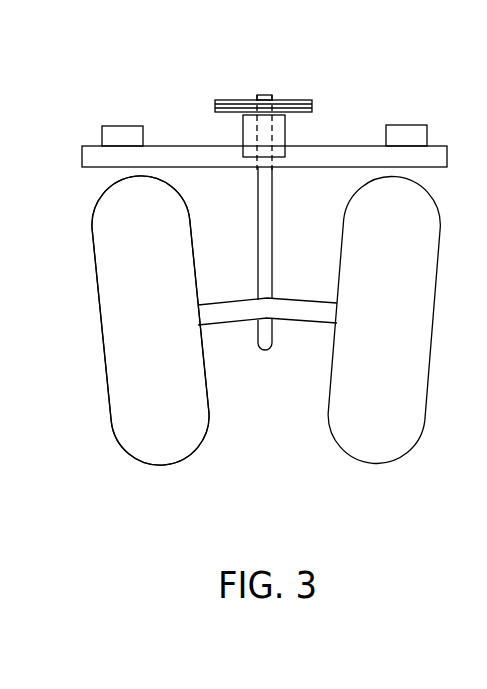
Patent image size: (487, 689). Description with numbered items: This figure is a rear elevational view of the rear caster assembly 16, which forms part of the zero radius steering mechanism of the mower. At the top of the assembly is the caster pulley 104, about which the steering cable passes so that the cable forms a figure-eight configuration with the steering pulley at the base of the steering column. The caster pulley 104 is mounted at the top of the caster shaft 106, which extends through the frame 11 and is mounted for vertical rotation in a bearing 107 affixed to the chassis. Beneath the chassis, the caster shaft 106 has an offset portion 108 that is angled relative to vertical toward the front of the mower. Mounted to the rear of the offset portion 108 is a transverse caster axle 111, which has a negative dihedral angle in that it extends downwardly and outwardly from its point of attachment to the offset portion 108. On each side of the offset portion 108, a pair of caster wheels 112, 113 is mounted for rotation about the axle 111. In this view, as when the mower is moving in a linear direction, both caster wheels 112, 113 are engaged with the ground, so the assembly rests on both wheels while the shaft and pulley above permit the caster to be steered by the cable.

The frame 11 is at (124, 132).
The rear caster assembly 16 is at (100, 368).
The caster pulley 104 is at (227, 100).
The caster shaft 106 is at (265, 97).
The bearing 107 is at (284, 138).
The offset portion 108 is at (262, 248).
The transverse caster axle 111 is at (297, 322).
The caster wheel 112 is at (378, 453).
The caster wheel 113 is at (155, 443).